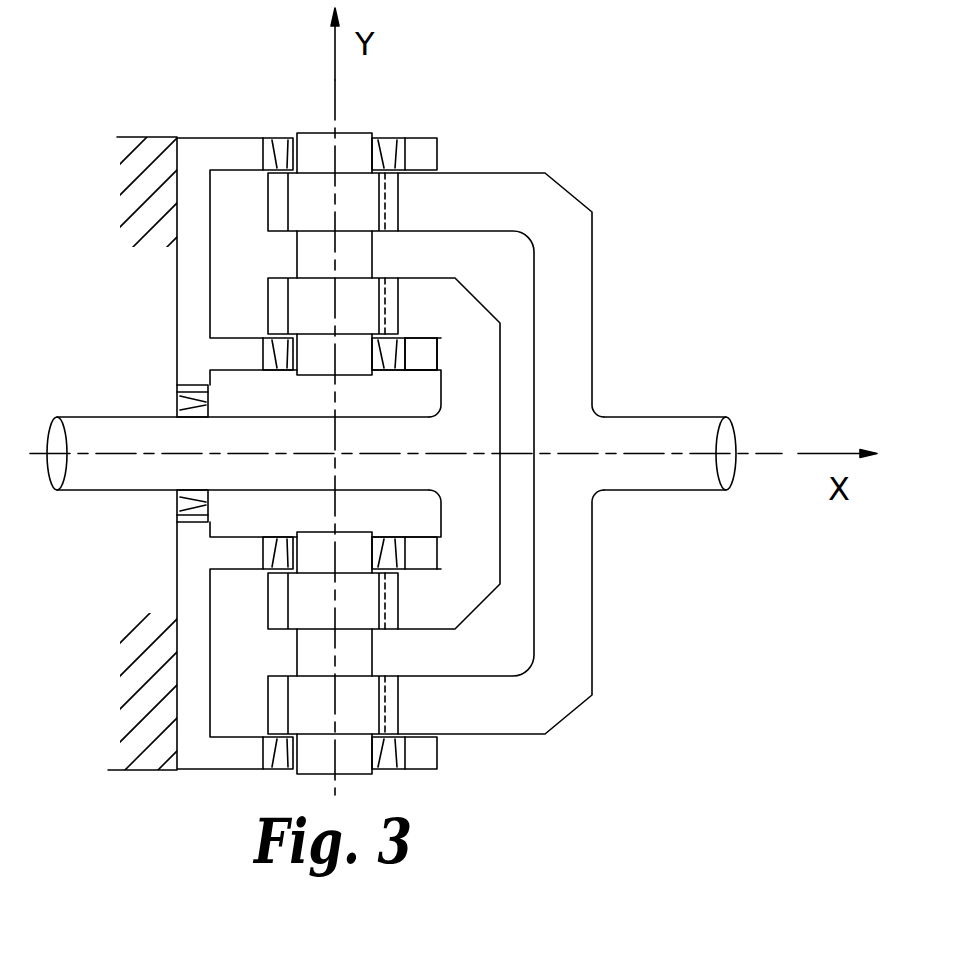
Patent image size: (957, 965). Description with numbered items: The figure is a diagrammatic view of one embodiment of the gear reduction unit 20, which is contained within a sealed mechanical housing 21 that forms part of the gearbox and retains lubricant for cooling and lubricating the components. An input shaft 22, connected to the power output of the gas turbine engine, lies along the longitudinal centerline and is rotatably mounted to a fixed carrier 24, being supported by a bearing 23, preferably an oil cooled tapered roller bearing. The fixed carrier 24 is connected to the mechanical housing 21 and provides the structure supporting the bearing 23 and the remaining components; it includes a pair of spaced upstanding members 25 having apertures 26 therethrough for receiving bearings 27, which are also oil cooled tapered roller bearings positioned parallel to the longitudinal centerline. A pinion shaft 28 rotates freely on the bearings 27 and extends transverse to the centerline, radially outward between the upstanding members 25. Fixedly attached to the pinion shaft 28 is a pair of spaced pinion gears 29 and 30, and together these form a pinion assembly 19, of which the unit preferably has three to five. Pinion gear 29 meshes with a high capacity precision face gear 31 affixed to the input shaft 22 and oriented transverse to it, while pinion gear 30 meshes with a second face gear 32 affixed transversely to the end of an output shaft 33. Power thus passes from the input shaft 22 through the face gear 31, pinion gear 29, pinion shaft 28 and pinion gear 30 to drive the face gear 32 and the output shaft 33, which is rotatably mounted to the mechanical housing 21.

The pinion assembly 19 is at (286, 250).
The gear reduction unit 20 is at (638, 207).
The mechanical housing 21 is at (158, 173).
The input shaft 22 is at (133, 423).
The bearing 23 is at (177, 505).
The fixed carrier 24 is at (183, 595).
The upstanding members 25 is at (428, 150).
The apertures 26 is at (400, 357).
The bearing 27 is at (280, 146).
The pinion shaft 28 is at (357, 248).
The pinion gear 29 is at (357, 322).
The pinion gear 30 is at (310, 188).
The face gear 31 is at (478, 525).
The face gear 32 is at (558, 232).
The output shaft 33 is at (677, 478).